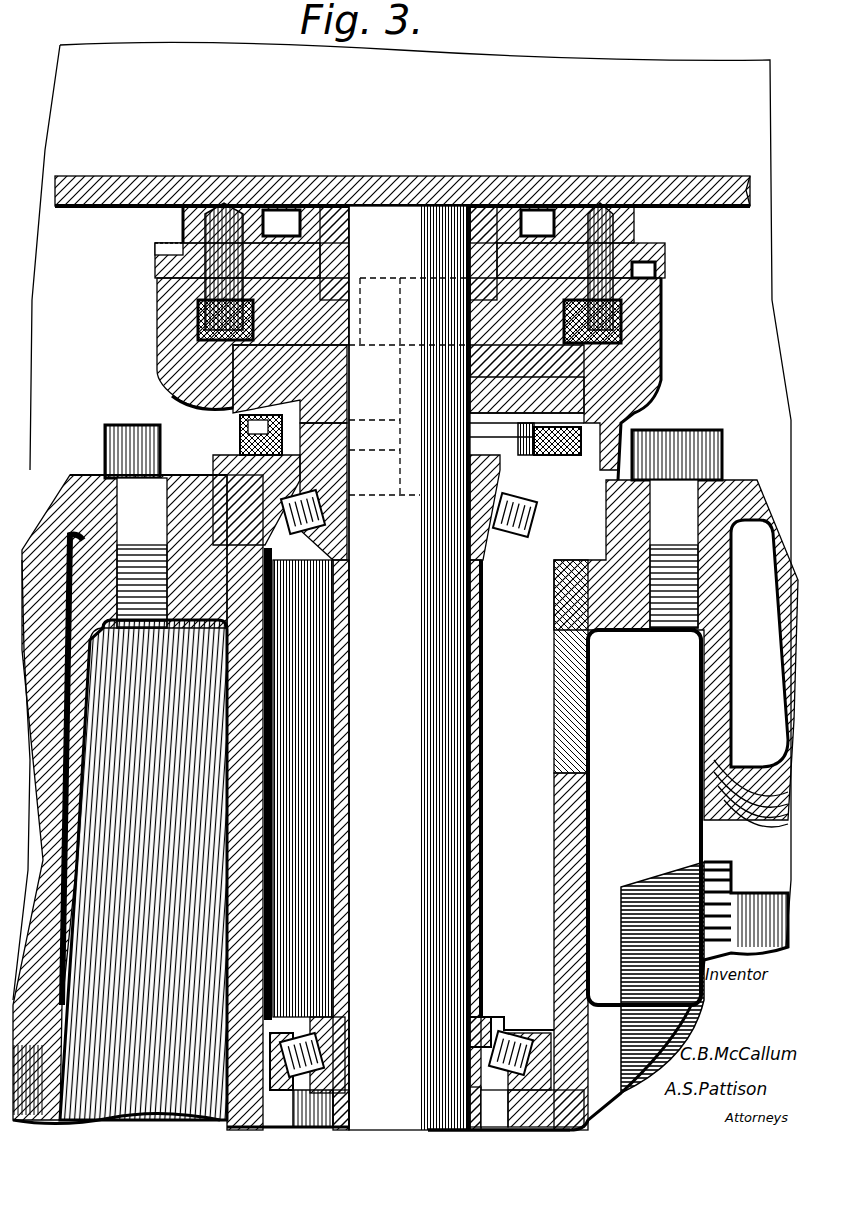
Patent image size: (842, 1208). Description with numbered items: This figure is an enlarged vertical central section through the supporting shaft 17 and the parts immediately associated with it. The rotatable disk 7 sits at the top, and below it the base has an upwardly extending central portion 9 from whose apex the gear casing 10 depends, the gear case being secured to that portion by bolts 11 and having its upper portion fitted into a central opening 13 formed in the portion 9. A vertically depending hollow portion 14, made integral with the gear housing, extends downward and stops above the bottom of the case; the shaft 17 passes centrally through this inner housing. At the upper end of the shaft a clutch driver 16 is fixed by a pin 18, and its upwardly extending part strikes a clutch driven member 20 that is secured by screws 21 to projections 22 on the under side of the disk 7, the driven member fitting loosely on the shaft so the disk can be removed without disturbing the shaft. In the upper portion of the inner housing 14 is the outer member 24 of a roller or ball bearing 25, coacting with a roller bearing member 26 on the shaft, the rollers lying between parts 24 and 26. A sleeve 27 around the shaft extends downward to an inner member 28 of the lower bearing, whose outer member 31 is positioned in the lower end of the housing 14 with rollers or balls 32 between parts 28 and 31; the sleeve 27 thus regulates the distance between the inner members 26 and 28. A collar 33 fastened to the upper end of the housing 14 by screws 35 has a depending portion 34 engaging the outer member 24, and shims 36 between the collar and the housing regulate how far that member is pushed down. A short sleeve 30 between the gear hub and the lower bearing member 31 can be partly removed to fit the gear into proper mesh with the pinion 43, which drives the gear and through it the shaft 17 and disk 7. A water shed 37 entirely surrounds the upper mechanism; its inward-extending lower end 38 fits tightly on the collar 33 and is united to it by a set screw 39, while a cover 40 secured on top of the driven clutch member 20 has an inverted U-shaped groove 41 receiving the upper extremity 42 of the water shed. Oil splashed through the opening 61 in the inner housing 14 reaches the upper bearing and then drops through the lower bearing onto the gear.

The rotatable disk 7 is at (178, 176).
The upwardly extending central portion 9 is at (774, 573).
The gear casing 10 is at (60, 943).
The bolts 11 is at (110, 430).
The central opening 13 is at (273, 627).
The vertically depending hollow portion 14 is at (247, 758).
The clutch driver 16 is at (578, 367).
The shaft 17 is at (446, 677).
The pin 18 is at (330, 427).
The clutch driven member 20 is at (200, 285).
The screws 21 is at (217, 315).
The projections 22 is at (642, 215).
The outer member of roller bearing 24 is at (293, 467).
The roller or ball bearing 25 is at (297, 570).
The roller bearing member 26 is at (347, 542).
The sleeve 27 is at (342, 650).
The inner member of ball or roller bearing 28 is at (343, 1017).
The short sleeve 30 is at (340, 1103).
The outer roller or ball bearing member 31 is at (267, 1067).
The rollers or balls 32 is at (257, 1030).
The collar 33 is at (217, 437).
The depending portion 34 is at (467, 490).
The screws 35 is at (230, 462).
The shims 36 is at (467, 567).
The water shed 37 is at (160, 350).
The lower end of water shed 38 is at (173, 380).
The set screw 39 is at (621, 430).
The cover 40 is at (157, 253).
The inverted U-shaped groove 41 is at (668, 263).
The upper extremity of water shed 42 is at (668, 287).
The pinion 43 is at (654, 873).
The opening 61 is at (581, 672).